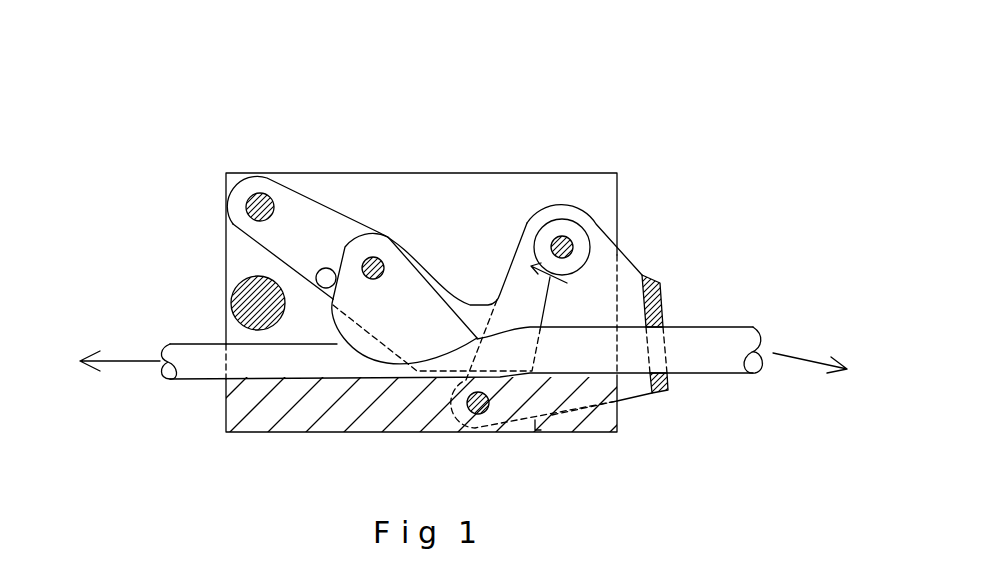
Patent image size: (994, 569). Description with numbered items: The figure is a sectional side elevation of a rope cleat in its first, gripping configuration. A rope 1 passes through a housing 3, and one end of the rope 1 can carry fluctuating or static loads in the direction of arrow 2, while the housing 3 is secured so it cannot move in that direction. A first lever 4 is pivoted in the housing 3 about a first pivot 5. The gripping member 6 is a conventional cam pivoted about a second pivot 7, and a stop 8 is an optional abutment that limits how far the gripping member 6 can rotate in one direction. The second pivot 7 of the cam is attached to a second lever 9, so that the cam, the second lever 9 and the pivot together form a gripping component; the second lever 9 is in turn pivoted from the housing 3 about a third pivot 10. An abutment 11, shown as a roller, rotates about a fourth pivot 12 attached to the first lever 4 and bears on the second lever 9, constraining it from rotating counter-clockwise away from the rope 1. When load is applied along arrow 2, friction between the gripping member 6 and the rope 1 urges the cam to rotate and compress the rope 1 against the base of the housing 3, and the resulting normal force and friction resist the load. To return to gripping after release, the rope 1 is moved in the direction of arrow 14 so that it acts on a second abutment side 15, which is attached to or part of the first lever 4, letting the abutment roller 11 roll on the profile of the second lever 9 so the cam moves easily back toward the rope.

The rope 1 is at (252, 363).
The arrow 2 is at (101, 362).
The housing 3 is at (465, 220).
The first lever 4 is at (628, 275).
The first pivot 5 is at (482, 410).
The gripping member 6 is at (405, 287).
The second pivot 7 is at (372, 262).
The stop 8 is at (326, 278).
The second lever 9 is at (295, 237).
The third pivot 10 is at (255, 203).
The abutment 11 is at (582, 238).
The fourth pivot 12 is at (562, 247).
The arrow 14 is at (833, 375).
The second abutment side 15 is at (667, 392).